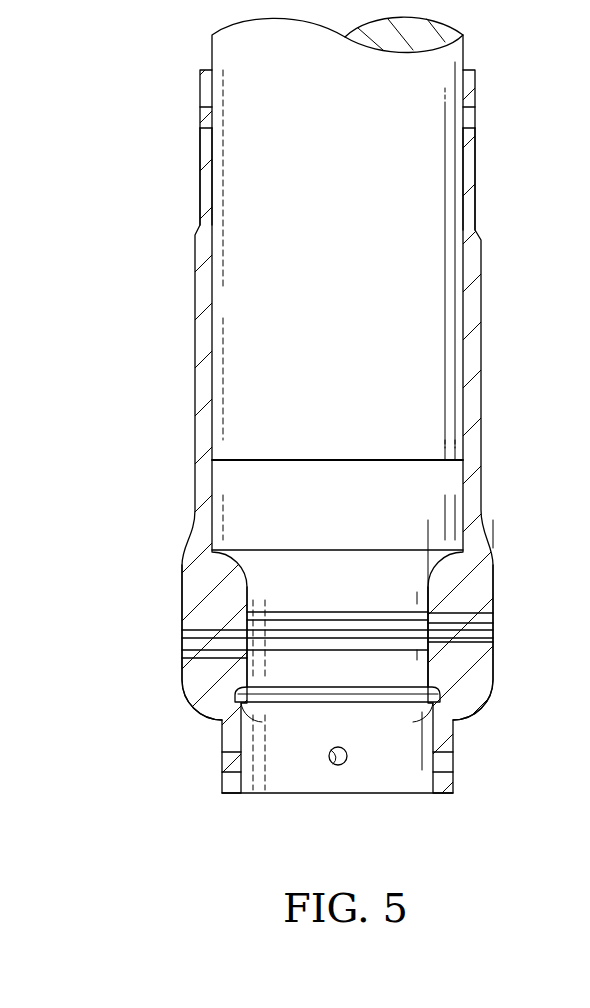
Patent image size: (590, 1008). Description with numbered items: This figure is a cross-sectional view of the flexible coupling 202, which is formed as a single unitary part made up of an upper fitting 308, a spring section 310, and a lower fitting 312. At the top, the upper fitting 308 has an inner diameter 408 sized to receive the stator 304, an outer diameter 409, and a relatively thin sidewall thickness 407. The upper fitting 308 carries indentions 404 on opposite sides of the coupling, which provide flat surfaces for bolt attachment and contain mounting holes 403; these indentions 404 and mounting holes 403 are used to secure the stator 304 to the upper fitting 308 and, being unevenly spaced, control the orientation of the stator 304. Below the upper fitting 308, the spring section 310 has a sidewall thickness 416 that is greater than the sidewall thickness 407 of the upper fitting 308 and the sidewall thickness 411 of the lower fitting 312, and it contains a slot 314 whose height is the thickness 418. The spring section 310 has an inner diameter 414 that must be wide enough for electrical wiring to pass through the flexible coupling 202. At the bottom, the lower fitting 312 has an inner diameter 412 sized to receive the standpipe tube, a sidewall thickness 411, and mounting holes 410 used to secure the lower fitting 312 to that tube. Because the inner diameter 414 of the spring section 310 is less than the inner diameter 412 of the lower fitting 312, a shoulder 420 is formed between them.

The flexible coupling 202 is at (119, 323).
The stator 304 is at (215, 52).
The upper fitting 308 is at (477, 305).
The spring section 310 is at (488, 583).
The lower fitting 312 is at (445, 723).
The slot 314 is at (480, 641).
The mounting holes 403 is at (205, 118).
The indentions 404 is at (205, 190).
The sidewall thickness 407 is at (222, 303).
The inner diameter 408 is at (463, 477).
The outer diameter 409 is at (158, 400).
The mounting holes 410 is at (328, 760).
The sidewall thickness 411 is at (395, 782).
The inner diameter 412 is at (433, 815).
The inner diameter 414 is at (247, 670).
The sidewall thickness 416 is at (393, 533).
The thickness 418 is at (160, 590).
The shoulder 420 is at (234, 716).